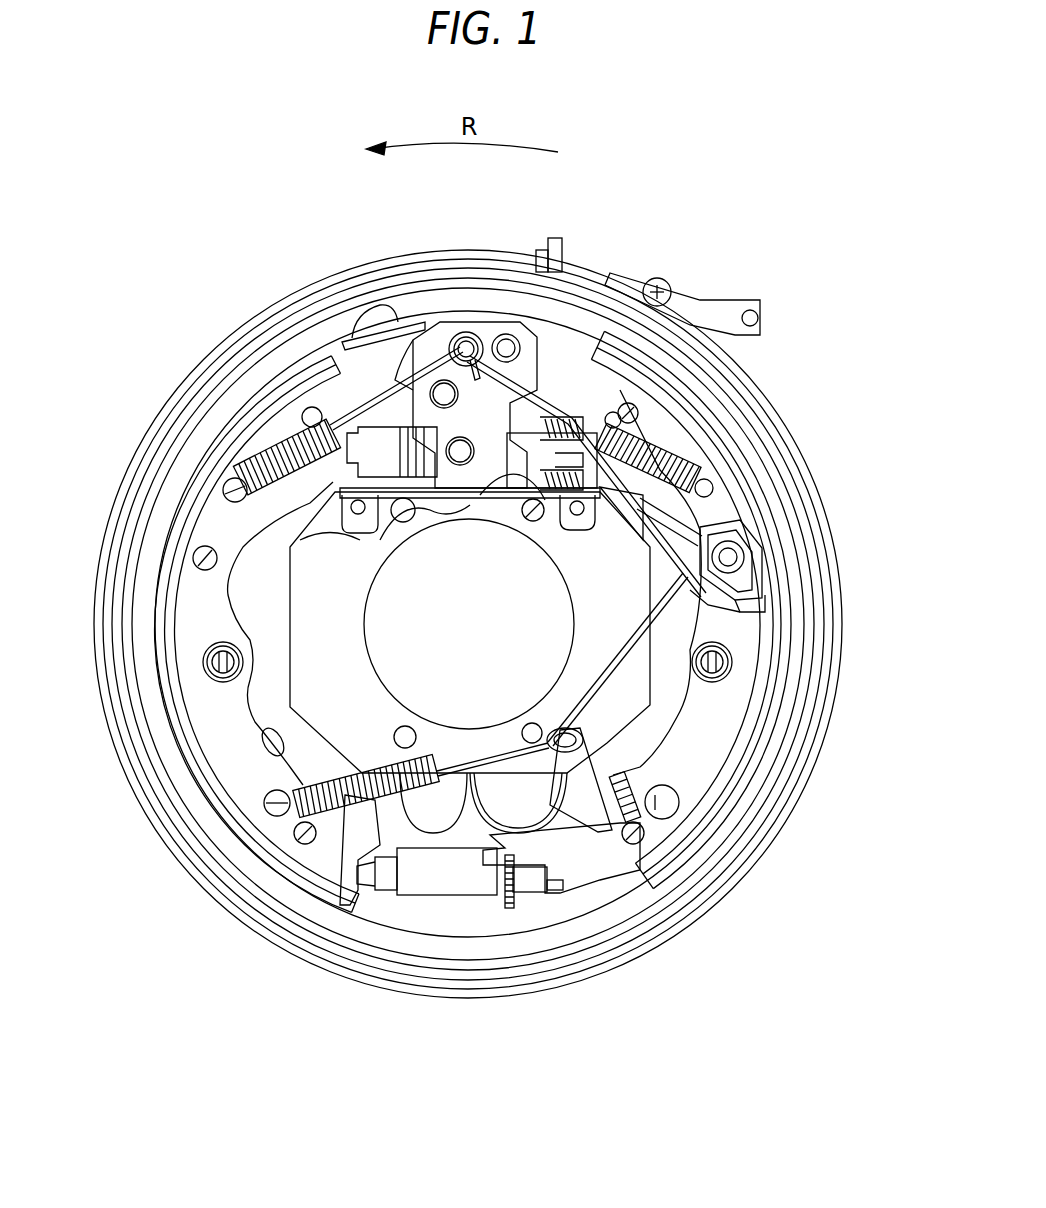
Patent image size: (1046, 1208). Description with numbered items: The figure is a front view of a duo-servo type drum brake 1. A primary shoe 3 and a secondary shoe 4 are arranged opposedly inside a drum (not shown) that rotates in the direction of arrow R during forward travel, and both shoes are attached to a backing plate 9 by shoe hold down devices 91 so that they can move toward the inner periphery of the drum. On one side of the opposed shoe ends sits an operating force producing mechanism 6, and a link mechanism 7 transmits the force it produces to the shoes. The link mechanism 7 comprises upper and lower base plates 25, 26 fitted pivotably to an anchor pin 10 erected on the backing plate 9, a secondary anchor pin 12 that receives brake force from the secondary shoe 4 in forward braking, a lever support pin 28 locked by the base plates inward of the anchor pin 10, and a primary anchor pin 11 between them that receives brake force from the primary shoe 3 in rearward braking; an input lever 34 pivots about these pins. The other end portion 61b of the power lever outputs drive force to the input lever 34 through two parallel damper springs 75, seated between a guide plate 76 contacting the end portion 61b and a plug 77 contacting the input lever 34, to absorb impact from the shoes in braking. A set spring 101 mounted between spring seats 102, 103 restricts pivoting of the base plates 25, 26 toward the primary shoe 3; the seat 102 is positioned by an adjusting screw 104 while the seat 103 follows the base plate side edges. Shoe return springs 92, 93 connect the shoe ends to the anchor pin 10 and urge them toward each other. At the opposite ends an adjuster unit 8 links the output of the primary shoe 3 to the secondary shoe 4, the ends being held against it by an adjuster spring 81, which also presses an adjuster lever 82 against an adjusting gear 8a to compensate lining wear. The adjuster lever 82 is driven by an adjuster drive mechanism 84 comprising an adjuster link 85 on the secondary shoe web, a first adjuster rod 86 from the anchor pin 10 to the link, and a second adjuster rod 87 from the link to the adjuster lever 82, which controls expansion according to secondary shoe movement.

The drum brake 1 is at (817, 455).
The primary shoe 3 is at (173, 517).
The secondary shoe 4 is at (735, 455).
The operating force producing mechanism 6 is at (700, 503).
The link mechanism 7 is at (550, 322).
The adjuster unit 8 is at (430, 880).
The adjusting gear 8a is at (517, 877).
The backing plate 9 is at (270, 305).
The anchor pin 10 is at (460, 335).
The primary anchor pin 11 is at (440, 393).
The secondary anchor pin 12 is at (505, 334).
The upper base plate 25 is at (425, 350).
The lower base plate 26 is at (422, 340).
The lever support pin 28 is at (456, 468).
The input lever 34 is at (443, 565).
The other end portion of the power lever 61b is at (590, 455).
The damper spring 75 is at (563, 418).
The guide plate 76 is at (548, 500).
The plug 77 is at (492, 486).
The adjuster spring 81 is at (343, 810).
The adjuster lever 82 is at (590, 833).
The adjuster drive mechanism 84 is at (732, 537).
The adjuster link 85 is at (765, 607).
The first adjuster rod 86 is at (655, 515).
The second adjuster rod 87 is at (623, 673).
The shoe hold down device 91 is at (203, 663).
The shoe return spring 92 is at (250, 457).
The shoe return spring 93 is at (667, 447).
The set spring 101 is at (362, 542).
The spring seat 102 is at (390, 497).
The spring seat 103 is at (478, 480).
The adjusting screw 104 is at (343, 510).